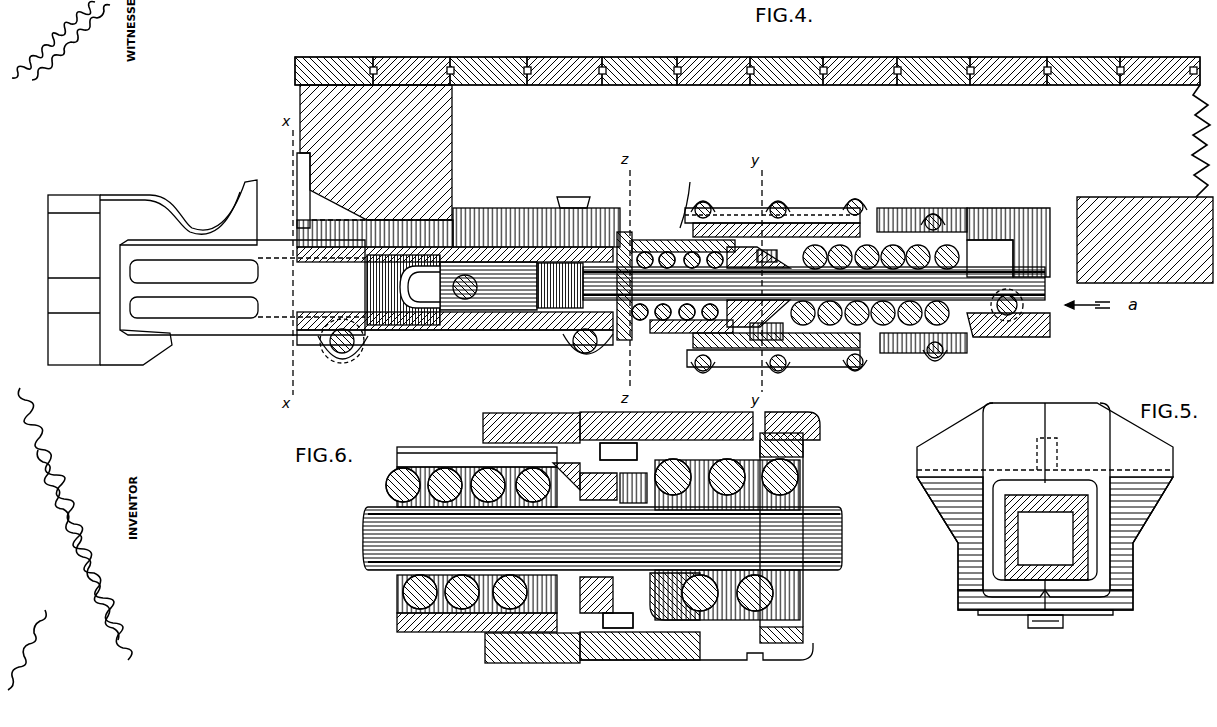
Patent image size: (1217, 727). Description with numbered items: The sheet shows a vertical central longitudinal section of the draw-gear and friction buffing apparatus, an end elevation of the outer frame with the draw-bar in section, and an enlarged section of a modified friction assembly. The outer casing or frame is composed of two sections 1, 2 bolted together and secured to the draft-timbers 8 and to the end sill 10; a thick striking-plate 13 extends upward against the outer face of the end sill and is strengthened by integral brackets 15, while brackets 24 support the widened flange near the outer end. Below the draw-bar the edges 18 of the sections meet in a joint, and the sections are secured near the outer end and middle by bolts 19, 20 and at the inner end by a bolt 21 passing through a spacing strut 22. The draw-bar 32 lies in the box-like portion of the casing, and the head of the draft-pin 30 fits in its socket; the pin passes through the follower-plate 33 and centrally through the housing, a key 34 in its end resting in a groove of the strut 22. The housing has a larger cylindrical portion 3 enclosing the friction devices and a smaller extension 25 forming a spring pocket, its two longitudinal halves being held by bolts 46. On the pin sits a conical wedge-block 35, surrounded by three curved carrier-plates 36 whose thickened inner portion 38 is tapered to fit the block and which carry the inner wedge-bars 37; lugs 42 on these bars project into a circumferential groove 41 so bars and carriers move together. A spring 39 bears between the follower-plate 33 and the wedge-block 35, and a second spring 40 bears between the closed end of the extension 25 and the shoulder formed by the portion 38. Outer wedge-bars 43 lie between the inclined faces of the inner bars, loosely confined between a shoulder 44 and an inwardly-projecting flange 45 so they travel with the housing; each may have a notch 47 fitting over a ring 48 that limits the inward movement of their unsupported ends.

In FIG. 5, the casing section 1 is at (1107, 540).
In FIG. 4, the casing section 2 is at (1048, 270).
In FIG. 5, the casing section 2 is at (985, 548).
In FIG. 4, the housing 3 is at (830, 367).
In FIG. 4, the draft-timbers 8 is at (752, 127).
In FIG. 4, the end sill 10 is at (420, 147).
In FIG. 5, the striking-plate 13 is at (1020, 412).
In FIG. 4, the brackets 15 is at (374, 190).
In FIG. 4, the edges 18 is at (412, 340).
In FIG. 4, the bolt 19 is at (345, 353).
In FIG. 4, the bolt 20 is at (580, 350).
In FIG. 4, the bolt 21 is at (1010, 337).
In FIG. 4, the strut 22 is at (1050, 327).
In FIG. 5, the brackets 24 is at (1140, 513).
In FIG. 4, the housing extension 25 is at (980, 215).
In FIG. 4, the draft-pin 30 is at (814, 283).
In FIG. 6, the draft-pin 30 is at (602, 538).
In FIG. 4, the draw-bar 32 is at (206, 272).
In FIG. 4, the follower-plate 33 is at (623, 342).
In FIG. 4, the key 34 is at (990, 258).
In FIG. 4, the wedge-block 35 is at (745, 330).
In FIG. 6, the wedge-block 35 is at (565, 470).
In FIG. 4, the carrier-plates 36 is at (672, 240).
In FIG. 6, the carrier-plates 36 is at (435, 628).
In FIG. 6, the wedge-bars 37 is at (555, 645).
In FIG. 4, the thickened inner portion 38 is at (766, 295).
In FIG. 6, the thickened inner portion 38 is at (658, 543).
In FIG. 4, the spring 39 is at (642, 333).
In FIG. 6, the spring 39 is at (466, 580).
In FIG. 4, the spring 40 is at (920, 270).
In FIG. 6, the spring 40 is at (705, 580).
In FIG. 6, the circumferential groove 41 is at (603, 628).
In FIG. 6, the lugs 42 is at (620, 630).
In FIG. 6, the outer wedge-bars 43 is at (727, 660).
In FIG. 4, the shoulder 44 is at (882, 228).
In FIG. 4, the flange 45 is at (681, 228).
In FIG. 4, the bolts 46 is at (936, 365).
In FIG. 6, the notch 47 is at (798, 645).
In FIG. 6, the ring 48 is at (805, 450).